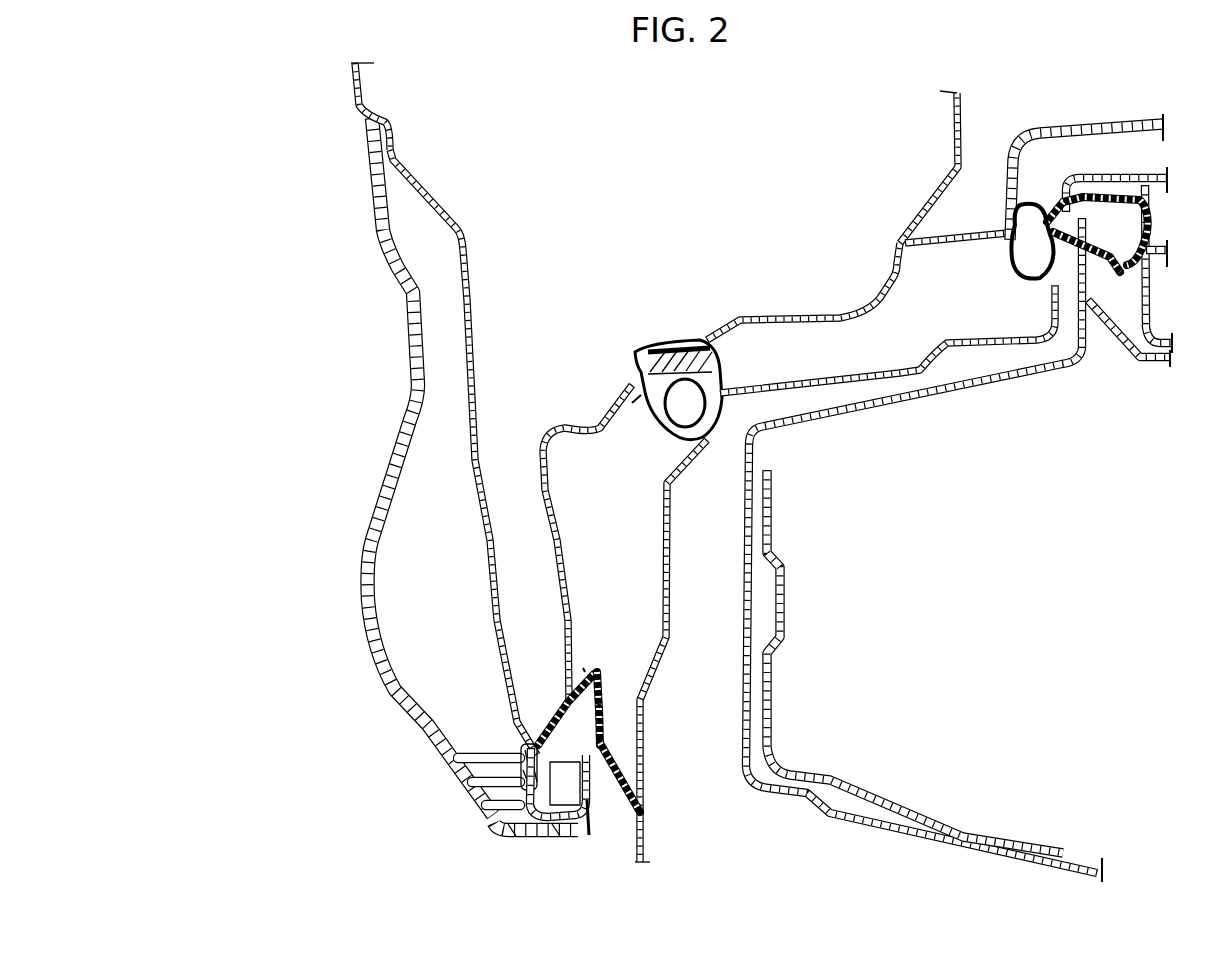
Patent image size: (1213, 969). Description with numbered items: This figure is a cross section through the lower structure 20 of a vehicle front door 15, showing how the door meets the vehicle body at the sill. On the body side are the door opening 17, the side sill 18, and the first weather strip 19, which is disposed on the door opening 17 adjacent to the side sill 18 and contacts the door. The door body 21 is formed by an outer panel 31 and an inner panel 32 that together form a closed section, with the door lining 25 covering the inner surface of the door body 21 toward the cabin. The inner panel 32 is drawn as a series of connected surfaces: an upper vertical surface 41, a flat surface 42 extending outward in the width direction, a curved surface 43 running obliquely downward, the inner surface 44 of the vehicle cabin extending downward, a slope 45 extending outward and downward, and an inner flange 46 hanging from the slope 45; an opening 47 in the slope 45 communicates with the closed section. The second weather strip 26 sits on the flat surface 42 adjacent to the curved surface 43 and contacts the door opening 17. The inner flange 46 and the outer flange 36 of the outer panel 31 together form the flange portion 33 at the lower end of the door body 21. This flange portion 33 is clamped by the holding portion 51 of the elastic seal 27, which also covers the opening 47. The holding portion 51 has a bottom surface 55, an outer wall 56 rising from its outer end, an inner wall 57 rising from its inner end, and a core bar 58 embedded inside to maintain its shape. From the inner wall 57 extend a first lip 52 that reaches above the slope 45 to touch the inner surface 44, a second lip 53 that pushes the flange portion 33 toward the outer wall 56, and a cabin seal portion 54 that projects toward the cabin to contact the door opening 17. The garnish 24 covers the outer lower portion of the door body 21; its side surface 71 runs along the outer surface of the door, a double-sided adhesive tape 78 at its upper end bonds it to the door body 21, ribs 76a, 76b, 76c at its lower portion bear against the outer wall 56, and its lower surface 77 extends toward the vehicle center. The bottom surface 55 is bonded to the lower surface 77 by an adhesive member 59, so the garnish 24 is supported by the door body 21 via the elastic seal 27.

The front door 15 is at (471, 452).
The door opening 17 is at (873, 370).
The side sill 18 is at (847, 412).
The first weather strip 19 is at (1030, 278).
The lower structure of the vehicle door 20 is at (656, 492).
The door body 21 is at (449, 452).
The garnish 24 is at (370, 480).
The door lining 25 is at (1100, 133).
The second weather strip 26 is at (677, 437).
The elastic seal 27 is at (584, 664).
The outer panel 31 is at (487, 525).
The inner panel 32 is at (469, 530).
The flange portion 33 is at (486, 723).
The outer flange 36 is at (520, 767).
The upper vertical surface 41 is at (955, 142).
The flat surface 42 is at (740, 322).
The curved surface 43 is at (630, 390).
The inner surface of the vehicle cabin 44 is at (560, 523).
The slope 45 is at (552, 684).
The inner flange 46 is at (523, 760).
The opening 47 is at (547, 727).
The holding portion 51 is at (583, 791).
The first lip 52 is at (603, 663).
The second lip 53 is at (566, 735).
The cabin seal portion 54 is at (648, 817).
The bottom surface 55 is at (537, 832).
The outer wall 56 is at (497, 832).
The inner wall 57 is at (628, 814).
The core bar 58 is at (577, 846).
The adhesive member 59 is at (556, 826).
The side surface 71 is at (367, 560).
The rib 76a is at (460, 754).
The rib 76b is at (473, 778).
The rib 76c is at (487, 801).
The lower surface 77 is at (514, 828).
The double-sided adhesive tape 78 is at (383, 122).